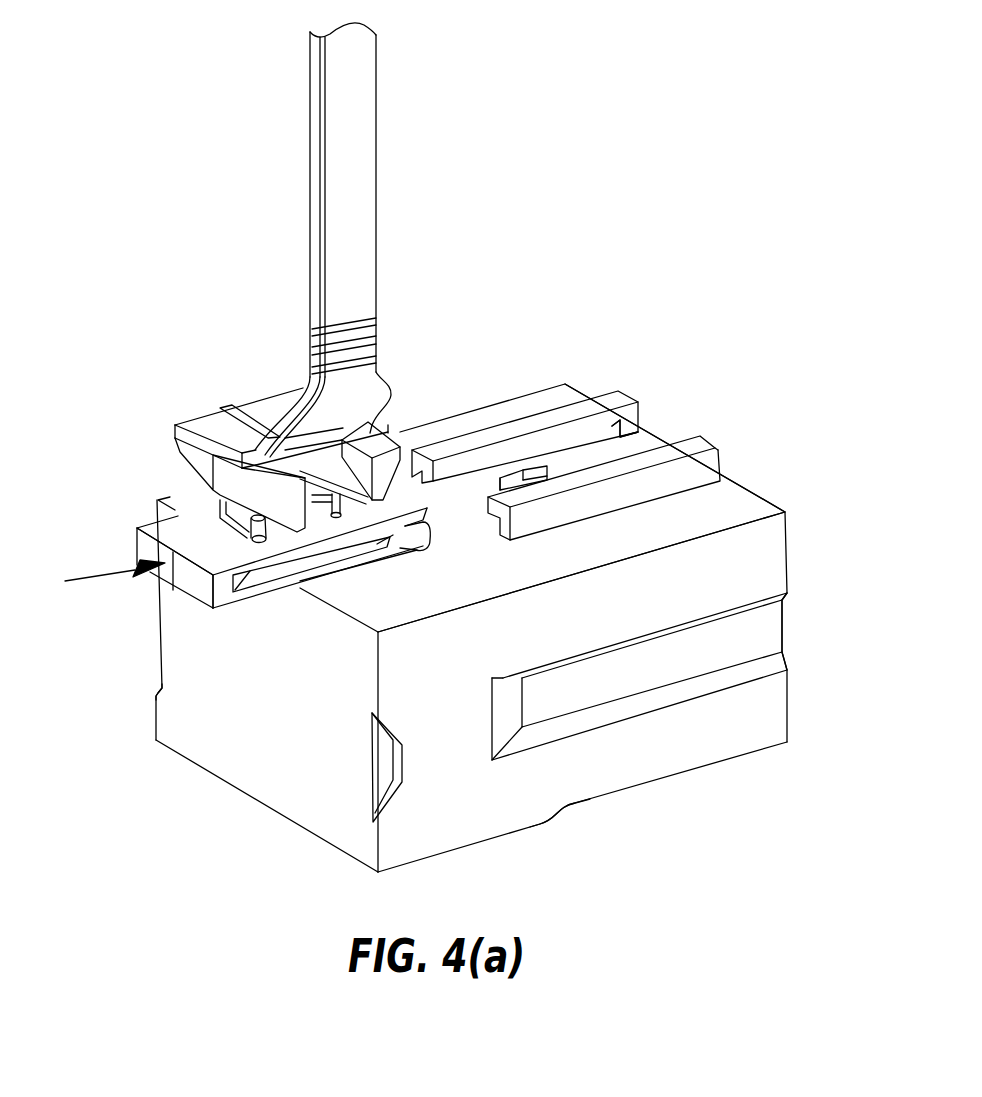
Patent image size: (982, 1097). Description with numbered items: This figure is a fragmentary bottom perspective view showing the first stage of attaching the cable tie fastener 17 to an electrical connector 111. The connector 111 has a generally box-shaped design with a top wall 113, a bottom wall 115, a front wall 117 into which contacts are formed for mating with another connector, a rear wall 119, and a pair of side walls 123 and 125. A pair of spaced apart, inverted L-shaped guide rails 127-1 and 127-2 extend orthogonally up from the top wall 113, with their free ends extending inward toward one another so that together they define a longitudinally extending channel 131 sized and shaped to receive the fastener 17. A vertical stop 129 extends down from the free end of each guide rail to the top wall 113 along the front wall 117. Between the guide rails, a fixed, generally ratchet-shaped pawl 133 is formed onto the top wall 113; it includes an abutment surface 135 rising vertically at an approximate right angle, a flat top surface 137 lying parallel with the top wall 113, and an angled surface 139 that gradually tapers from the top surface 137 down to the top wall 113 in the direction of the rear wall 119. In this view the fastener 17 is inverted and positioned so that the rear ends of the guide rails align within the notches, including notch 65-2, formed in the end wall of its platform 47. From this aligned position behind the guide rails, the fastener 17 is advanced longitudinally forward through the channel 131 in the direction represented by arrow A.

The electrical connector 111 is at (277, 778).
The top wall 113 is at (755, 510).
The bottom wall 115 is at (640, 786).
The front wall 117 is at (787, 688).
The rear wall 119 is at (241, 678).
The side wall 123 is at (500, 813).
The side wall 125 is at (155, 703).
The fastener 17 is at (140, 530).
The platform 47 is at (190, 593).
The notch 65-2 is at (417, 542).
The guide rail 127-1 is at (617, 395).
The guide rail 127-2 is at (713, 458).
The vertical stop 129 is at (630, 420).
The channel 131 is at (597, 442).
The fixed pawl 133 is at (500, 483).
The abutment surface 135 is at (547, 473).
The flat top surface 137 is at (515, 480).
The angled surface 139 is at (500, 488).
The arrow A is at (105, 564).